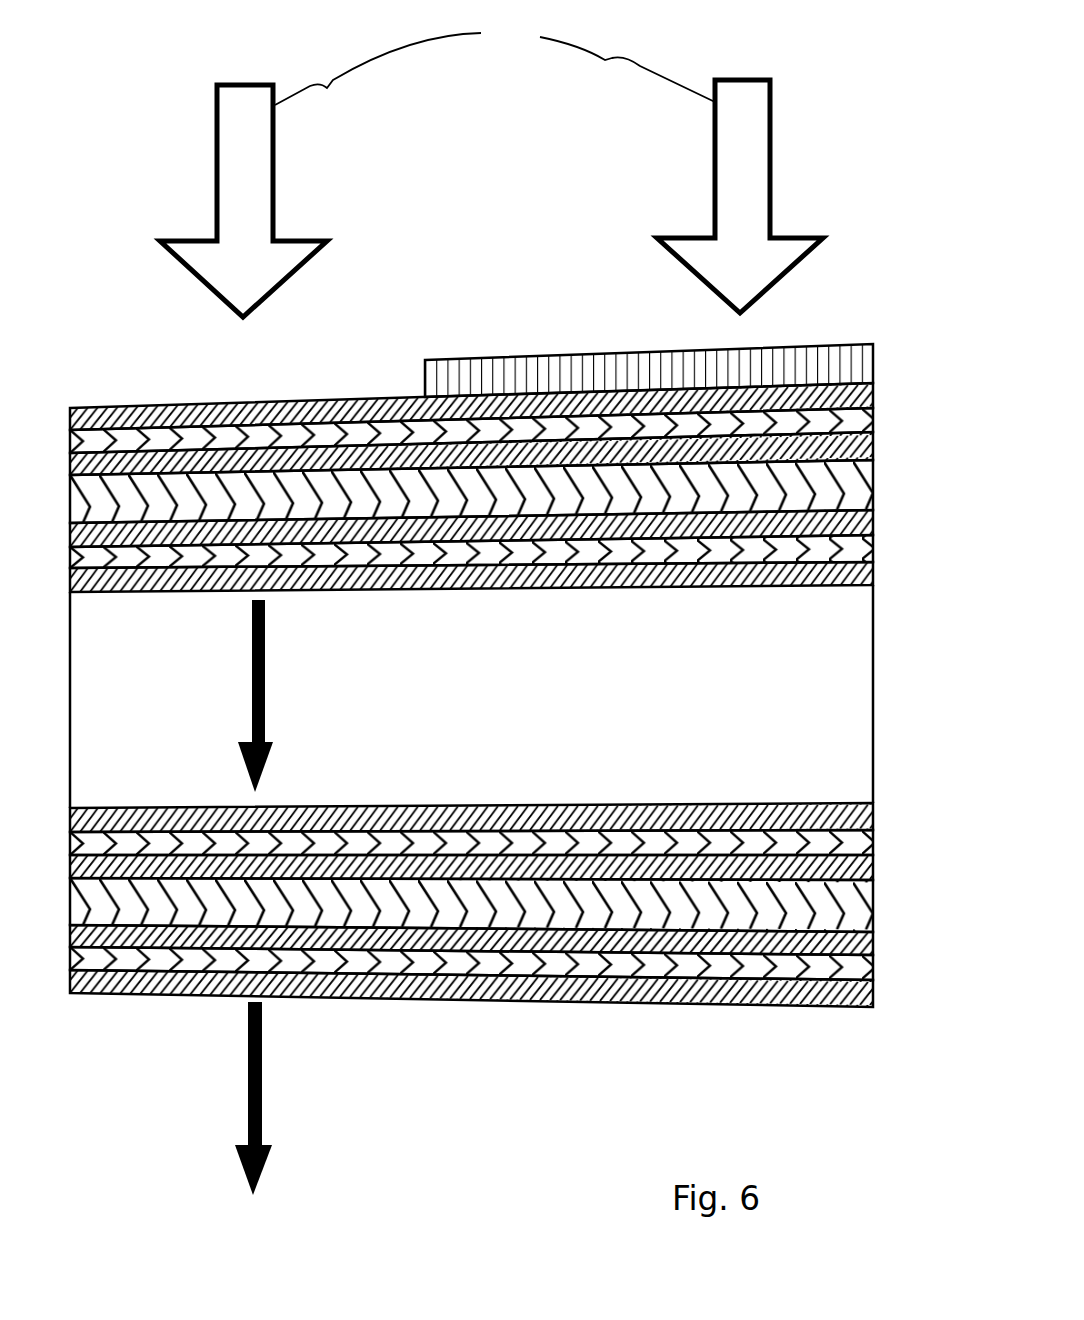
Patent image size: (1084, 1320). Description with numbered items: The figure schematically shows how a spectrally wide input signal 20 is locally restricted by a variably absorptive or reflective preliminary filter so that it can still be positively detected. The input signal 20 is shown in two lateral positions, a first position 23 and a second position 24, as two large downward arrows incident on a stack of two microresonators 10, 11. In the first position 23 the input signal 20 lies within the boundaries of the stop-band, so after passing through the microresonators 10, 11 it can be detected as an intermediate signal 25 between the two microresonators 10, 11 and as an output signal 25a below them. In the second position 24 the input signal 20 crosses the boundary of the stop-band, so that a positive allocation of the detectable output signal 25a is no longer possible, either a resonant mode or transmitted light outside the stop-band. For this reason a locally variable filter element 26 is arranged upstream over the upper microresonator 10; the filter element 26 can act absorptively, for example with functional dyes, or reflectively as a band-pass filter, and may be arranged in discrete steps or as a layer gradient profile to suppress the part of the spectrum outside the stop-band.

The input signal 20 is at (495, 61).
The first position 23 is at (275, 171).
The second position 24 is at (772, 170).
The filter element 26 is at (846, 352).
The microresonator 10 is at (880, 386).
The intermediate signal 25 is at (267, 691).
The microresonator 11 is at (877, 1007).
The output signal 25a is at (263, 1098).